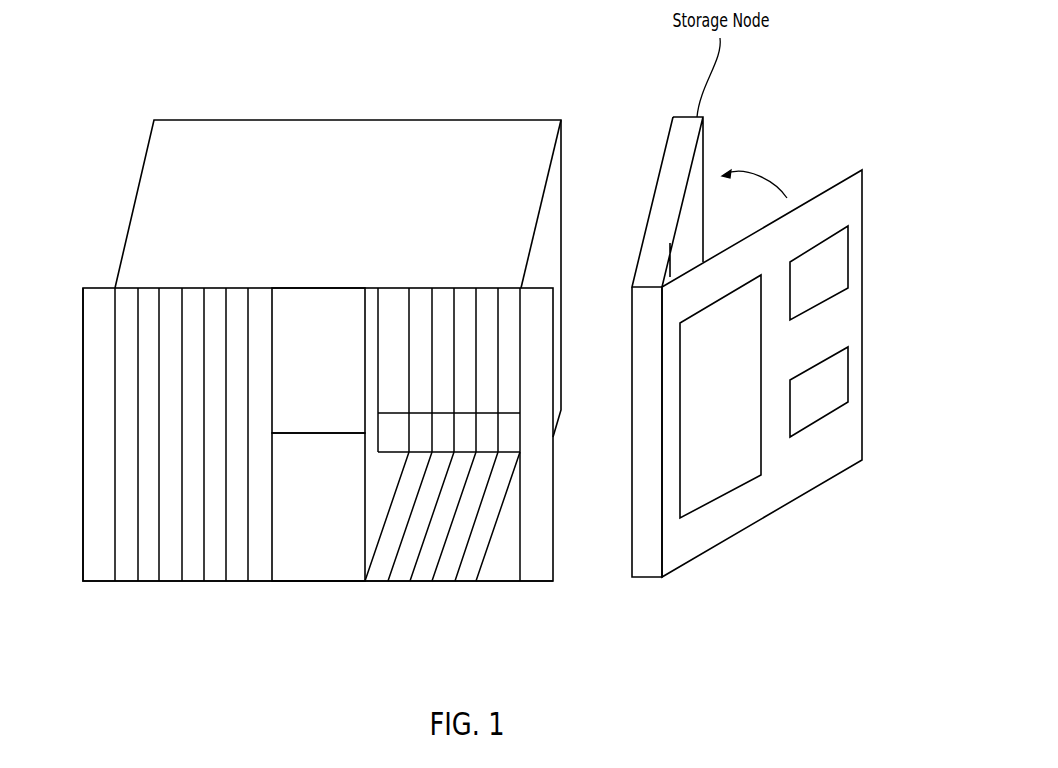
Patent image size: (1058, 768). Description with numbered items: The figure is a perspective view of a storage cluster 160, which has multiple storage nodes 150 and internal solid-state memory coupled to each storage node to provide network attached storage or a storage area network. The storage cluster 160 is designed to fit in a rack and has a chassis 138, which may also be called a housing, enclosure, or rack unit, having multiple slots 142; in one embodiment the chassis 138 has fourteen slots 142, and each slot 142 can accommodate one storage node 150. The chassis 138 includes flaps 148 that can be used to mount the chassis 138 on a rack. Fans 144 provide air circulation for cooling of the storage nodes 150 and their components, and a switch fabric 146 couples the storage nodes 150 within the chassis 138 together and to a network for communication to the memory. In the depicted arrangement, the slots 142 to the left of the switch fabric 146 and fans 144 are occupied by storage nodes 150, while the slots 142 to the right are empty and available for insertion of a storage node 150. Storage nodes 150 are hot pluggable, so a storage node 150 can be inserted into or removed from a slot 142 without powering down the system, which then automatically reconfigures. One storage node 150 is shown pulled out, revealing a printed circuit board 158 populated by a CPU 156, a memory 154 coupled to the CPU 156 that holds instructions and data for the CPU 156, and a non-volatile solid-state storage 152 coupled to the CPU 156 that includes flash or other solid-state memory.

The storage cluster 160 is at (181, 59).
The chassis 138 is at (200, 119).
The flaps 148 is at (83, 433).
The storage node 150 is at (123, 581).
The switch fabric 146 is at (319, 287).
The fans 144 is at (320, 583).
The slot 142 is at (688, 117).
The printed circuit board 158 is at (862, 219).
The non-volatile solid-state storage 152 is at (720, 498).
The memory 154 is at (818, 240).
The CPU 156 is at (849, 372).